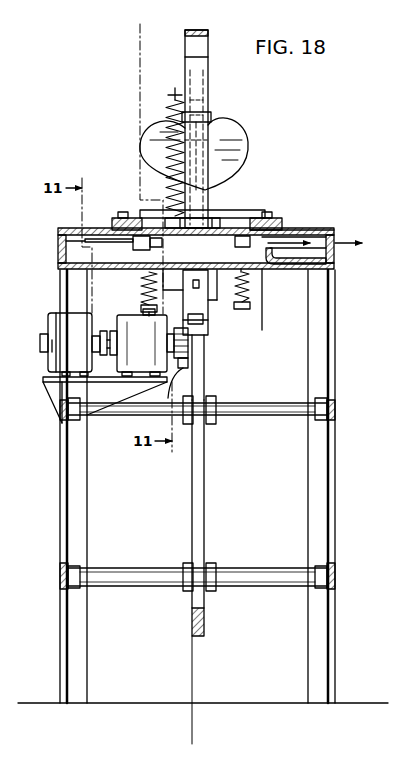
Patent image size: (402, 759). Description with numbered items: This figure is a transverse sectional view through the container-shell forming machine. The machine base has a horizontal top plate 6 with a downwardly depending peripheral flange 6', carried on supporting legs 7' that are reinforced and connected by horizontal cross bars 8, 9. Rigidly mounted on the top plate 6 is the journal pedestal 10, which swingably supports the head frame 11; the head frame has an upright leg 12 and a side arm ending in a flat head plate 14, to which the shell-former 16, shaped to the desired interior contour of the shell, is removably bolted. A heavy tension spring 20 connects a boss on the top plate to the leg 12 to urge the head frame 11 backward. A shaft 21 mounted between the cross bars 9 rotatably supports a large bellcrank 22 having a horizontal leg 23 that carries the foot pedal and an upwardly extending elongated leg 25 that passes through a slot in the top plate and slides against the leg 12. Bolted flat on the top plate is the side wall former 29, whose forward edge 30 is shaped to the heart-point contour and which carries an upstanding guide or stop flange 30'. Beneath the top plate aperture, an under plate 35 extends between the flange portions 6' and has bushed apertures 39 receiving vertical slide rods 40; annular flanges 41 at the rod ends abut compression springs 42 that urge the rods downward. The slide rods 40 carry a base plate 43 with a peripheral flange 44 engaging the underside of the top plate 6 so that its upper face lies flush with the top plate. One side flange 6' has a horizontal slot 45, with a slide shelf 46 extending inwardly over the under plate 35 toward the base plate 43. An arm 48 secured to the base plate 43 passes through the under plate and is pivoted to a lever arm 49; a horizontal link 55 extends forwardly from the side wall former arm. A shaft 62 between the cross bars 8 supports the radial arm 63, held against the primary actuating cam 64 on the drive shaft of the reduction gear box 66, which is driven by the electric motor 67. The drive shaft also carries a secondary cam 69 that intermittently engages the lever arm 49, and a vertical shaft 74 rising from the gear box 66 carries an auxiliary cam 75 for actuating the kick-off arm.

The top plate 6 is at (196, 230).
The peripheral flange 6' is at (188, 252).
The supporting leg 7' is at (200, 486).
The cross bar 8 is at (60, 410).
The cross bar 9 is at (60, 575).
The journal pedestal 10 is at (140, 34).
The head frame 11 is at (208, 72).
The upright leg 12 is at (208, 36).
The head plate 14 is at (212, 118).
The shell-former 16 is at (242, 133).
The tension spring 20 is at (172, 104).
The shaft 21 is at (250, 572).
The bellcrank 22 is at (192, 556).
The horizontal leg 23 is at (205, 626).
The elongated leg 25 is at (205, 472).
The side wall former 29 is at (276, 228).
The forward edge 30 is at (127, 205).
The guide or stop flange 30' is at (281, 200).
The under plate 35 is at (272, 270).
The bushed aperture 39 is at (204, 288).
The slide rod 40 is at (276, 254).
The annular flange 41 is at (241, 309).
The compression spring 42 is at (246, 292).
The base plate 43 is at (240, 238).
The peripheral flange 44 is at (282, 236).
The horizontal slot 45 is at (338, 241).
The slide shelf 46 is at (316, 248).
The arm 48 is at (208, 304).
The lever arm 49 is at (200, 320).
The horizontal link 55 is at (193, 286).
The shaft 62 is at (255, 419).
The radial arm 63 is at (204, 387).
The primary actuating cam 64 is at (190, 353).
The reduction gear box 66 is at (114, 342).
The electric motor 67 is at (58, 330).
The secondary cam 69 is at (190, 372).
The vertical shaft 74 is at (141, 288).
The auxiliary cam 75 is at (134, 248).